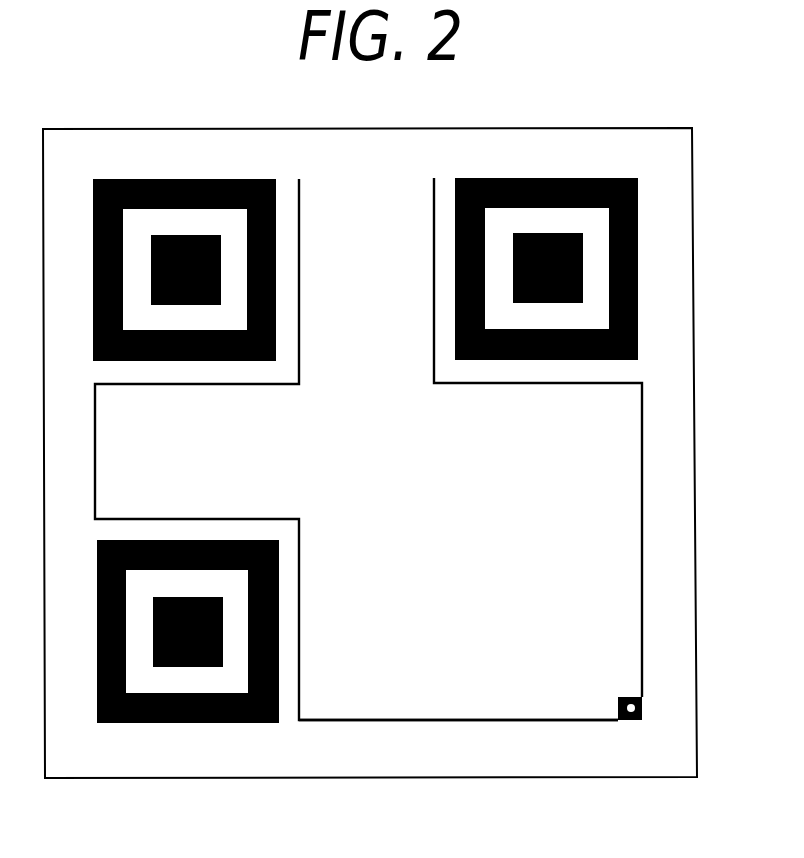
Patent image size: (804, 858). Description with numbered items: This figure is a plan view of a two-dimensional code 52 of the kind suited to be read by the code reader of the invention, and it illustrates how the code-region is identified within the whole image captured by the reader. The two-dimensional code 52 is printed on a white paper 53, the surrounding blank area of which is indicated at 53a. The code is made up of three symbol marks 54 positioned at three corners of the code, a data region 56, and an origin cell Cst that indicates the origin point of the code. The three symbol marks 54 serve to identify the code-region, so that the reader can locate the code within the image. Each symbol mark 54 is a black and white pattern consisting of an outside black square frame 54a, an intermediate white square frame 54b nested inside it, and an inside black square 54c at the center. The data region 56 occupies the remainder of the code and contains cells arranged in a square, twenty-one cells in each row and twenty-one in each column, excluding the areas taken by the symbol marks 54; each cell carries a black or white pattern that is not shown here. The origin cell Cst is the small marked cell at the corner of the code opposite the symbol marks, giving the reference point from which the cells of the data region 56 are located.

The 2-dimensional code 52 is at (475, 111).
The white paper 53 is at (353, 128).
The pattern region 53a is at (229, 153).
The symbol mark 54 is at (420, 453).
The outside black square frame 54a is at (615, 177).
The intermediate white square frame 54b is at (598, 235).
The inside black square 54c is at (583, 292).
The data region 56 is at (570, 707).
The origin cell Cst is at (642, 708).